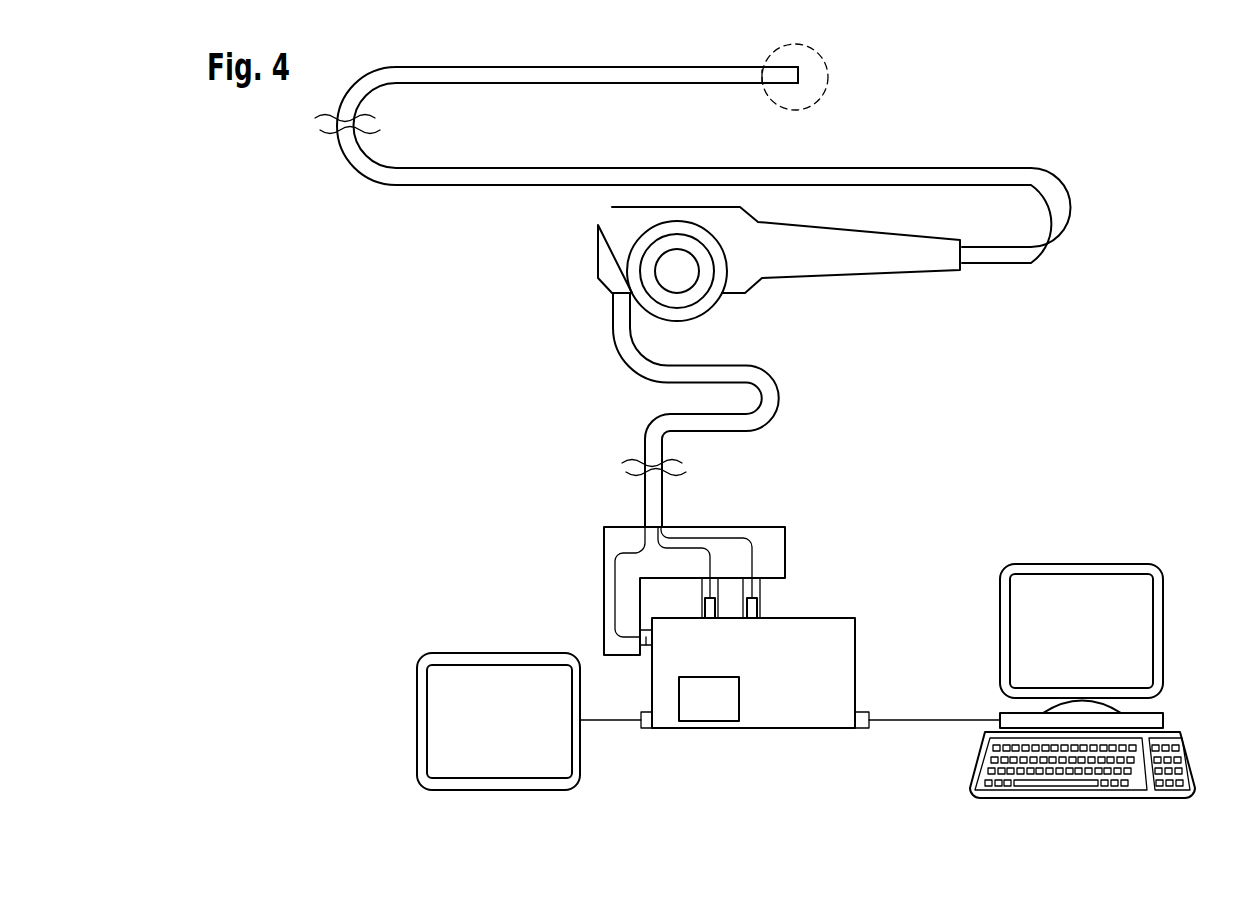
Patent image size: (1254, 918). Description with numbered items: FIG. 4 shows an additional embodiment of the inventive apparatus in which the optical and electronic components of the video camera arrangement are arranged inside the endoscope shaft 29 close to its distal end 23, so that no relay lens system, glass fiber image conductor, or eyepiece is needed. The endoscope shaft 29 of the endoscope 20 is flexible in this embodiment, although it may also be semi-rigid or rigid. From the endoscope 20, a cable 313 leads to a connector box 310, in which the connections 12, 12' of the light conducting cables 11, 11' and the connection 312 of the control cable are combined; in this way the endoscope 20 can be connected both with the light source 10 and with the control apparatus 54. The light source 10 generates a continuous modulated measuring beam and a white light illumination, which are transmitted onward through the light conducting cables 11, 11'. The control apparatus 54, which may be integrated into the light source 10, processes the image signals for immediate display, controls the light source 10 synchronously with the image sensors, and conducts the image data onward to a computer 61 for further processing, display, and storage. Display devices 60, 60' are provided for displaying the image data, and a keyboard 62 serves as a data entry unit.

The endoscope 20 is at (950, 155).
The distal end 23 is at (830, 80).
The endoscope shaft 29 is at (463, 188).
The connecting cable 313 is at (780, 397).
The connector box 310 is at (603, 537).
The light conducting cable 11' is at (684, 540).
The light conducting cable 11 is at (706, 540).
The connection 12' is at (681, 598).
The connection 12 is at (779, 598).
The connection 312 is at (645, 648).
The light source 10 is at (793, 725).
The control apparatus 54 is at (705, 722).
The display device 60 is at (527, 721).
The display device 60' is at (1114, 638).
The computer 61 is at (1163, 722).
The keyboard 62 is at (1195, 760).